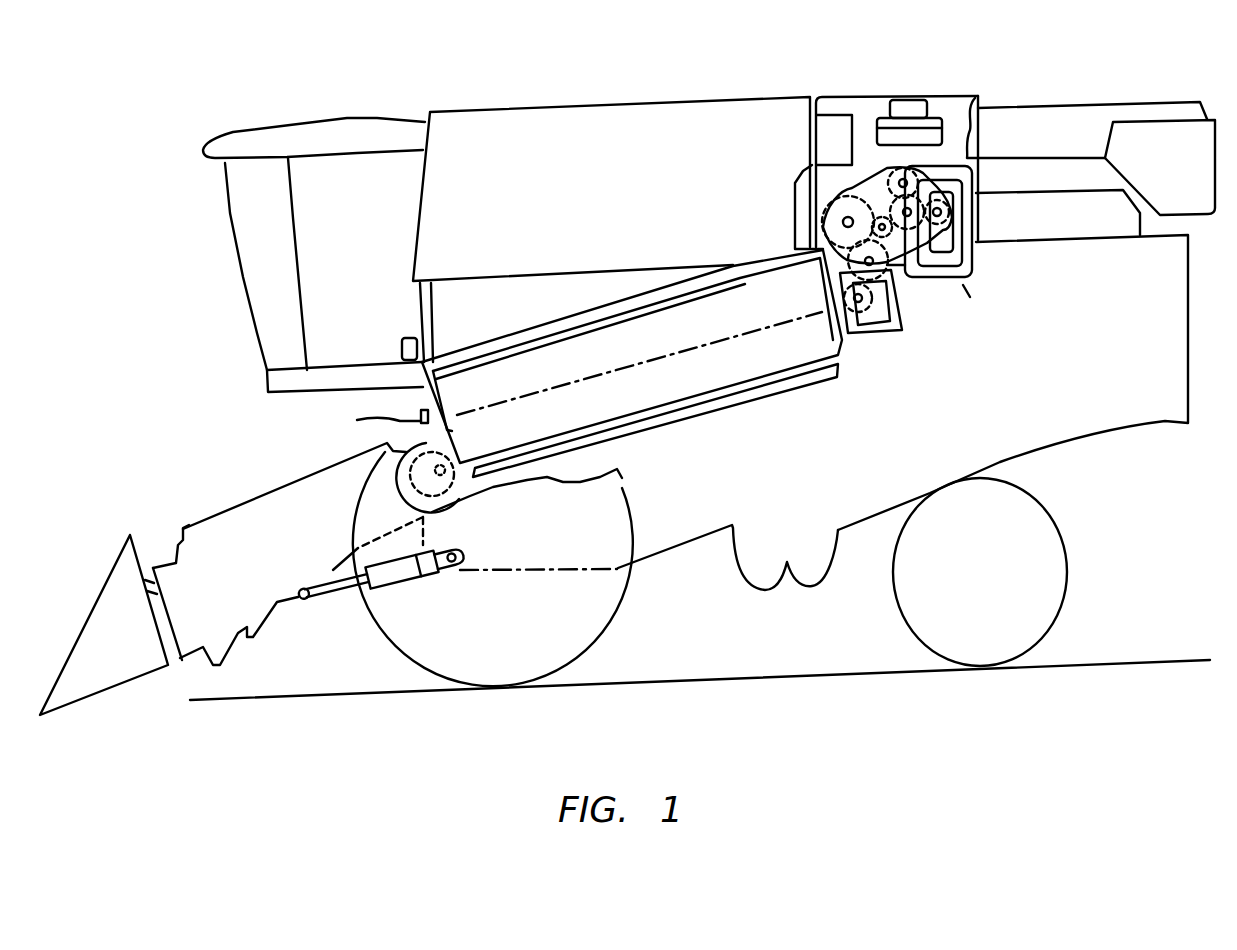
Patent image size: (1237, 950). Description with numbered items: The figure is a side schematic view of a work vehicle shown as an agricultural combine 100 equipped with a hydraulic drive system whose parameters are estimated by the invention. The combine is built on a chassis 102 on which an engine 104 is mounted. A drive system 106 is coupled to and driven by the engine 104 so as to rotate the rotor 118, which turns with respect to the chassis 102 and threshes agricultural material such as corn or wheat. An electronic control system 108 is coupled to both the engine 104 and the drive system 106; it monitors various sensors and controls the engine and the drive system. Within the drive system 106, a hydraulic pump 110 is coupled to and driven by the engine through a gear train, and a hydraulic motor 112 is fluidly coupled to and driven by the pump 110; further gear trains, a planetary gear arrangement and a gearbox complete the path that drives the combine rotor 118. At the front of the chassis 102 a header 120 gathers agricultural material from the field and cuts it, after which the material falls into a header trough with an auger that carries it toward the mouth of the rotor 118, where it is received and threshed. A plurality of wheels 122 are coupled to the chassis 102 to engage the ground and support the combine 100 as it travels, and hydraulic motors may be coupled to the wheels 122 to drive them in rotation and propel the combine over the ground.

The agricultural combine 100 is at (681, 52).
The chassis 102 is at (713, 490).
The engine 104 is at (903, 100).
The drive system 106 is at (862, 186).
The electronic control system 108 is at (402, 348).
The hydraulic pump 110 is at (939, 172).
The hydraulic motor 112 is at (850, 334).
The rotor 118 is at (600, 333).
The header 120 is at (116, 592).
The wheels 122 is at (395, 615).